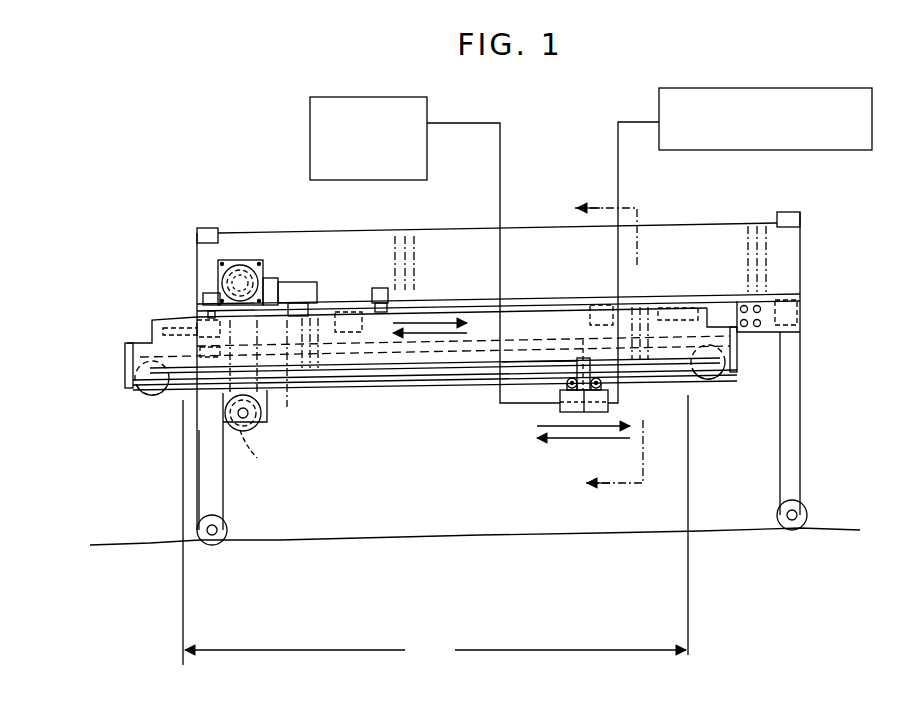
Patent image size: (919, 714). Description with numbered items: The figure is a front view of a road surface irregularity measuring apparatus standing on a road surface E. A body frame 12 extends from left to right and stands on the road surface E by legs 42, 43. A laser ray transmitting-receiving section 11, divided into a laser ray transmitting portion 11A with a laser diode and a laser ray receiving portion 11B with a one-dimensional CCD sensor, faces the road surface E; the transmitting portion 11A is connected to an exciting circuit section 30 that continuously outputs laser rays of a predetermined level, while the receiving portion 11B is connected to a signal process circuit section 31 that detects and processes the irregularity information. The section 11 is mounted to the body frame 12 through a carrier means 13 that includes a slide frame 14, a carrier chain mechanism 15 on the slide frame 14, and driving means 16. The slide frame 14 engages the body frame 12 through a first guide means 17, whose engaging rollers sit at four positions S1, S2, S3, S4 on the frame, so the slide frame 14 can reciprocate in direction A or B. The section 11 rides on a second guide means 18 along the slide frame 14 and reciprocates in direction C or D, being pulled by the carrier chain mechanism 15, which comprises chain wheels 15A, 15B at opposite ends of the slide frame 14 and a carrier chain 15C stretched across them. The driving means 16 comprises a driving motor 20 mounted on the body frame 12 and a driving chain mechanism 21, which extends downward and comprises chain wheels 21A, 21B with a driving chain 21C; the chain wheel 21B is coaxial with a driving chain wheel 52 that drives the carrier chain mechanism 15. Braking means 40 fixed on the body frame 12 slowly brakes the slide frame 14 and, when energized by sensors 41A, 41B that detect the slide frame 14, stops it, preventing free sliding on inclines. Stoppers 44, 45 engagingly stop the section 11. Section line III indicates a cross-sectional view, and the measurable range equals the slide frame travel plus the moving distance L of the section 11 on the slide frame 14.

The laser ray transmitting-receiving section 11 is at (557, 414).
The laser ray transmitting portion 11A is at (557, 402).
The laser ray receiving portion 11B is at (608, 402).
The body frame 12 is at (707, 223).
The carrier means 13 is at (687, 387).
The slide frame 14 is at (150, 320).
The carrier chain mechanism 15 is at (367, 396).
The chain wheel 15A is at (722, 384).
The chain wheel 15B is at (147, 397).
The carrier chain 15C is at (420, 388).
The driving means 16 is at (236, 258).
The first guide means 17 is at (681, 308).
The second guide means 18 is at (536, 361).
The driving motor 20 is at (265, 279).
The driving chain mechanism 21 is at (220, 394).
The chain wheel 21A is at (248, 269).
The chain wheel 21B is at (261, 459).
The driving chain 21C is at (274, 411).
The exciting circuit section 30 is at (310, 123).
The signal process circuit section 31 is at (872, 120).
The braking means 40 is at (300, 281).
The sensor 41A is at (380, 287).
The sensor 41B is at (210, 293).
The leg 42 is at (792, 405).
The leg 43 is at (224, 495).
The stopper 44 is at (737, 352).
The stopper 45 is at (125, 348).
The driving chain wheel 52 is at (258, 428).
The position S1 is at (800, 315).
The position S2 is at (598, 305).
The position S3 is at (347, 312).
The position S4 is at (197, 320).
The direction A is at (468, 305).
The direction B is at (446, 322).
The direction C is at (608, 438).
The direction D is at (578, 438).
The road surface E is at (344, 535).
The moving distance L is at (435, 530).
The section line III is at (609, 346).